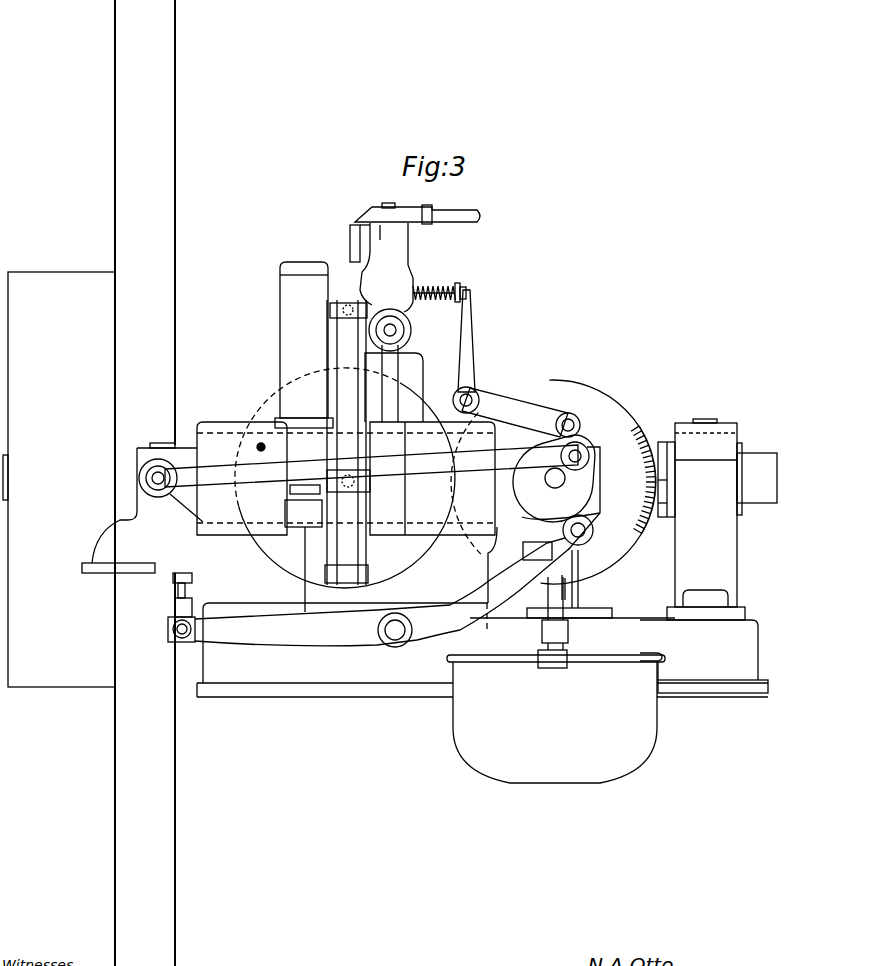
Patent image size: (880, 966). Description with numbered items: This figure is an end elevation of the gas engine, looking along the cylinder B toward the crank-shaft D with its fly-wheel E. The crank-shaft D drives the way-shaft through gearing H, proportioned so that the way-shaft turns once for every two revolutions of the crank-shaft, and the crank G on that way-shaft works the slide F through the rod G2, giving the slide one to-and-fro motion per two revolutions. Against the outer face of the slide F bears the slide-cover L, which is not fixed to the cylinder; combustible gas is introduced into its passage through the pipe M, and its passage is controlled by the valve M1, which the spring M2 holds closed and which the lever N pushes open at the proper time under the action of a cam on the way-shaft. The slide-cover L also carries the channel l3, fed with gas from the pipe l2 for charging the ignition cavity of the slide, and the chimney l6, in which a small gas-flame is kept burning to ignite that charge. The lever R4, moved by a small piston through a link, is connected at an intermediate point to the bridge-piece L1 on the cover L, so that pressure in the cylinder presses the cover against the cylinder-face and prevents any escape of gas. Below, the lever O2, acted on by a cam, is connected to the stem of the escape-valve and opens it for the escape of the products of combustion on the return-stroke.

The fly-wheel E is at (89, 483).
The slide F is at (142, 508).
The slide-cover L is at (346, 478).
The pipe l2 is at (264, 440).
The channel l3 is at (303, 548).
The chimney l6 is at (304, 345).
The lever R4 is at (347, 442).
The pipe M is at (390, 365).
The cylinder B is at (394, 387).
The valve M1 is at (415, 257).
The spring M2 is at (439, 285).
The lever N is at (516, 363).
The bridge-piece L1 is at (432, 478).
The rod G2 is at (371, 466).
The crank G is at (554, 478).
The gearing H is at (643, 474).
The crank-shaft D is at (708, 556).
The lever O2 is at (369, 592).